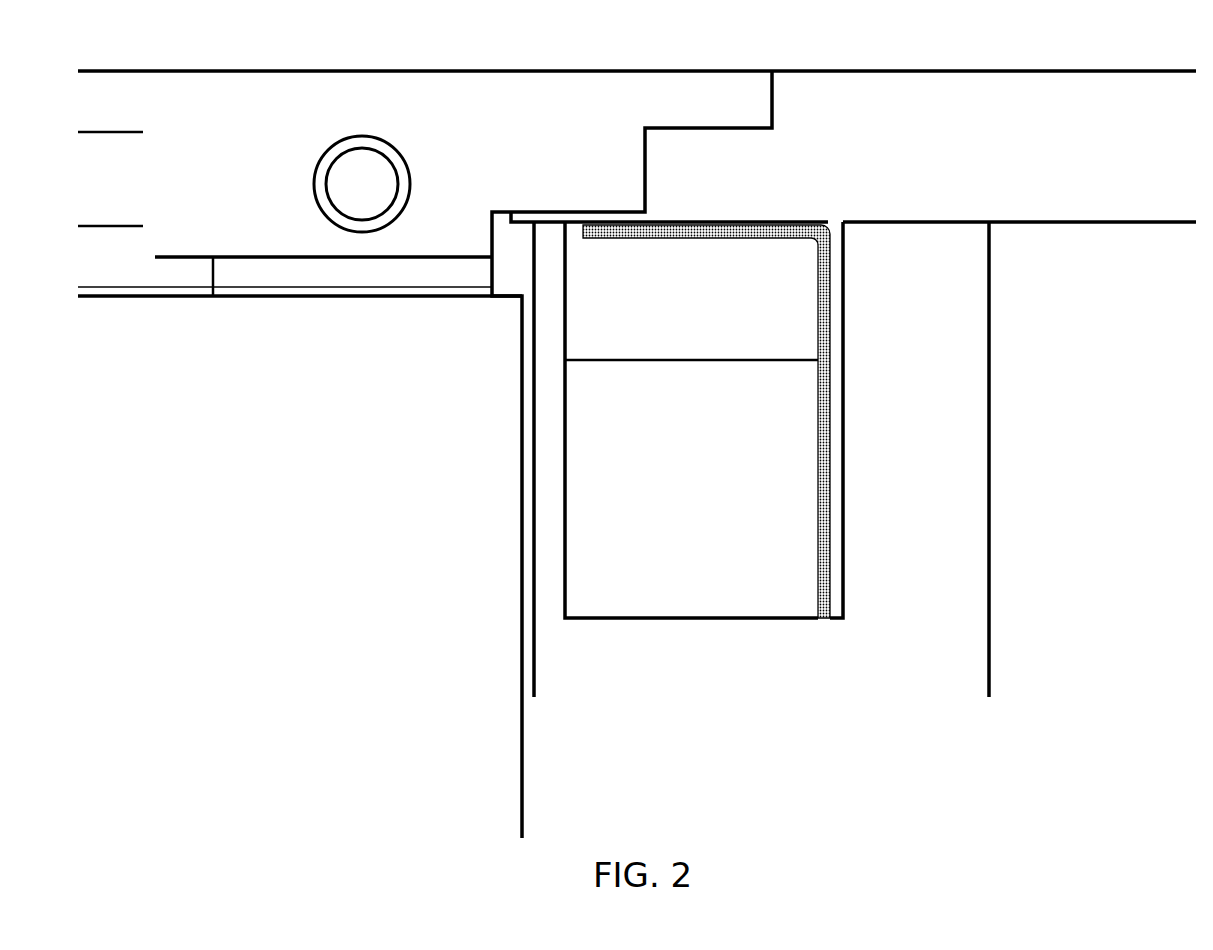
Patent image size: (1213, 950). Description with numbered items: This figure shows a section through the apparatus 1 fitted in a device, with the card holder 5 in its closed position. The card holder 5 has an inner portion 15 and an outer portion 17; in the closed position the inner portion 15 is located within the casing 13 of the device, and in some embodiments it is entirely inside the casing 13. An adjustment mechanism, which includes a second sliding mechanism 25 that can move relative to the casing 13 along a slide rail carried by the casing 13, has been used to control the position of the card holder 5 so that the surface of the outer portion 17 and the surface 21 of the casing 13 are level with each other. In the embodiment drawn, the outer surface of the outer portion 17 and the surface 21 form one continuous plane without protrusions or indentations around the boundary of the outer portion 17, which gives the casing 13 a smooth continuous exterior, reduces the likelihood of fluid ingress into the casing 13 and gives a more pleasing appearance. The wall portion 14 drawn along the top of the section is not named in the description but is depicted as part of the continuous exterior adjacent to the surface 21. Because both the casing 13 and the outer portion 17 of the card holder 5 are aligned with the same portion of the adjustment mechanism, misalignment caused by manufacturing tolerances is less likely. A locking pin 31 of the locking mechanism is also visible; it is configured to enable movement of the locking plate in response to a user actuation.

The apparatus 1 is at (963, 372).
The card holder 5 is at (85, 267).
The casing 13 is at (968, 105).
The upper wall 14 is at (475, 70).
The inner portion 15 is at (70, 475).
The outer portion 17 is at (228, 98).
The surface 21 is at (831, 71).
The second sliding mechanism 25 is at (968, 430).
The locking pin 31 is at (821, 300).